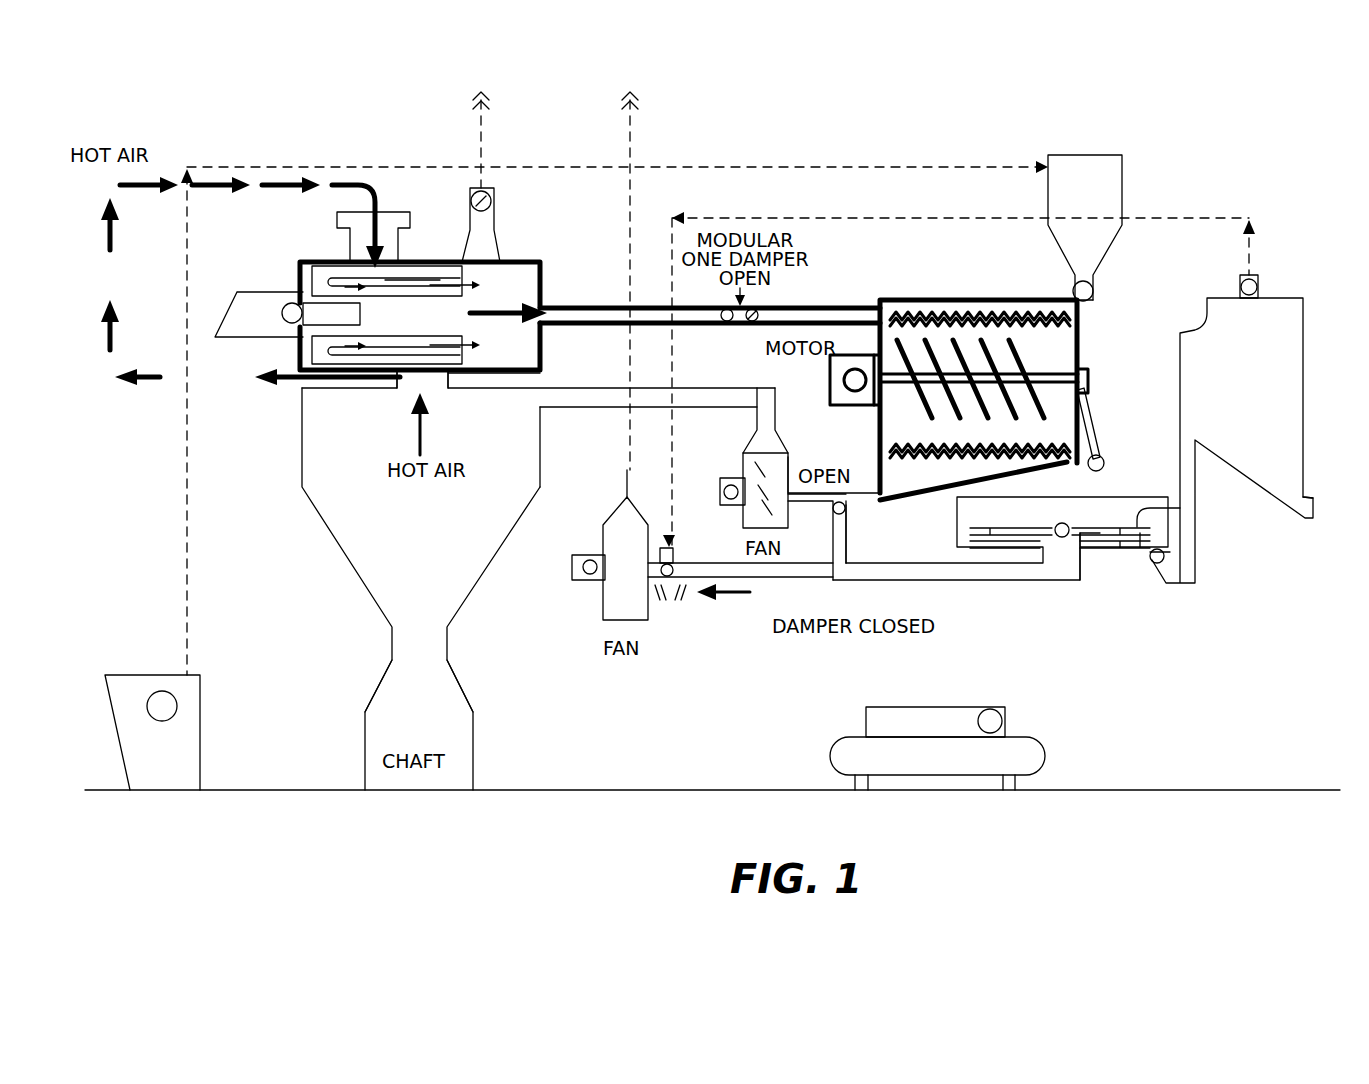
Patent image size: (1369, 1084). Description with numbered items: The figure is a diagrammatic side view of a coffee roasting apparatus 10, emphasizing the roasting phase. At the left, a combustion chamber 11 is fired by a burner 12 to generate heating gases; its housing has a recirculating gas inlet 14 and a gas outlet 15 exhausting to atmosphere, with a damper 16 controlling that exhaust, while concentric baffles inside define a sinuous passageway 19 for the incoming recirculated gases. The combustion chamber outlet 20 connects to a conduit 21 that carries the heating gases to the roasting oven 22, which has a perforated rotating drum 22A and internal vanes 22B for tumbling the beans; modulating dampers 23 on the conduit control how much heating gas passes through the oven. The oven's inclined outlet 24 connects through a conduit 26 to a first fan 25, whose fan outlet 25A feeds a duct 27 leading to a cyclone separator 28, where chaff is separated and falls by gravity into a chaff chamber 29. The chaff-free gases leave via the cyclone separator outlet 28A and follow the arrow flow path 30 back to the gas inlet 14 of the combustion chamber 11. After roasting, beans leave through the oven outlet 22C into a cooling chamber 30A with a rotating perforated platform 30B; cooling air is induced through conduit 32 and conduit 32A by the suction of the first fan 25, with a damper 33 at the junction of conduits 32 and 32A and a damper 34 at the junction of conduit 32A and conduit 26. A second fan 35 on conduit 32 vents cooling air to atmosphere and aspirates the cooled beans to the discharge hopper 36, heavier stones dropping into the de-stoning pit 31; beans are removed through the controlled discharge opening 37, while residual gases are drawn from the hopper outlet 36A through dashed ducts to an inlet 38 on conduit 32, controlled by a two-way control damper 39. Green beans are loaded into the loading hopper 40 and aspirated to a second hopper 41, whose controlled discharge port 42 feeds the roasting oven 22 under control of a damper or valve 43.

The coffee roasting apparatus 10 is at (1222, 195).
The combustion chamber 11 is at (528, 262).
The burner 12 is at (323, 313).
The recirculating gas inlet 14 is at (398, 245).
The gas outlet 15 is at (495, 188).
The damper 16 is at (494, 203).
The sinuous passageway 19 is at (397, 287).
The combustion chamber outlet 20 is at (548, 308).
The conduit 21 is at (700, 325).
The roasting oven 22 is at (955, 300).
The perforated rotating drum 22A is at (1085, 470).
The internal vanes 22B is at (1020, 357).
The oven outlet 22C is at (1090, 420).
The modulating dampers 23 is at (768, 310).
The inclined outlet 24 is at (893, 496).
The first fan 25 is at (792, 458).
The fan outlet 25A is at (760, 440).
The conduit 26 is at (800, 463).
The duct 27 is at (565, 407).
The cyclone separator 28 is at (421, 589).
The cyclone separator outlet 28A is at (390, 386).
The chaff chamber 29 is at (465, 730).
The arrow flow path 30 is at (122, 398).
The cooling chamber 30A is at (1120, 568).
The rotating perforated platform 30B is at (1168, 507).
The de-stoning pit 31 is at (1177, 570).
The conduit 32 is at (956, 583).
The conduit 32A is at (872, 525).
The damper 33 is at (838, 578).
The damper 34 is at (832, 510).
The second fan 35 is at (605, 598).
The discharge hopper 36 is at (1286, 438).
The hopper outlet 36A is at (1260, 285).
The controlled discharge opening 37 is at (1315, 512).
The inlet 38 is at (672, 552).
The two-way control damper 39 is at (685, 563).
The loading hopper 40 is at (185, 740).
The second hopper 41 is at (1123, 193).
The controlled discharge port 42 is at (1088, 318).
The damper or valve 43 is at (1090, 283).